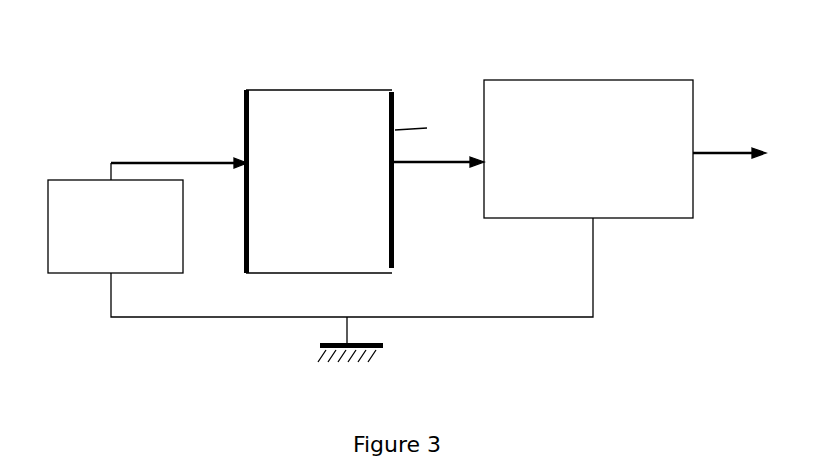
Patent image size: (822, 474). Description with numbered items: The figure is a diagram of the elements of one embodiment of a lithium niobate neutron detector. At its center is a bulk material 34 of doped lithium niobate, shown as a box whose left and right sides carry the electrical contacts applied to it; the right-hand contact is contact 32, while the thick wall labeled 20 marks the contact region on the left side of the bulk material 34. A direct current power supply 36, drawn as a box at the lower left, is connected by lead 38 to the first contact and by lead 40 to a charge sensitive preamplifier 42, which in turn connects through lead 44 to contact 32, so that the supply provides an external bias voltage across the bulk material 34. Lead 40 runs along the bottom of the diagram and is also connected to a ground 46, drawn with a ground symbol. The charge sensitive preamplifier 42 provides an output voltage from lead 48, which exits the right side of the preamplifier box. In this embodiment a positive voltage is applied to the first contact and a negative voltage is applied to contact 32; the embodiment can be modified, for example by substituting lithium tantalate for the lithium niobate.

The membrane walls of separator 20 is at (243, 123).
The electrical contact 32 is at (427, 128).
The bulk material 34 is at (285, 152).
The direct current power supply 36 is at (72, 288).
The lead 38 is at (149, 158).
The lead 40 is at (232, 320).
The charge sensitive preamplifier 42 is at (582, 78).
The lead 44 is at (425, 168).
The ground 46 is at (370, 343).
The lead 48 is at (743, 160).